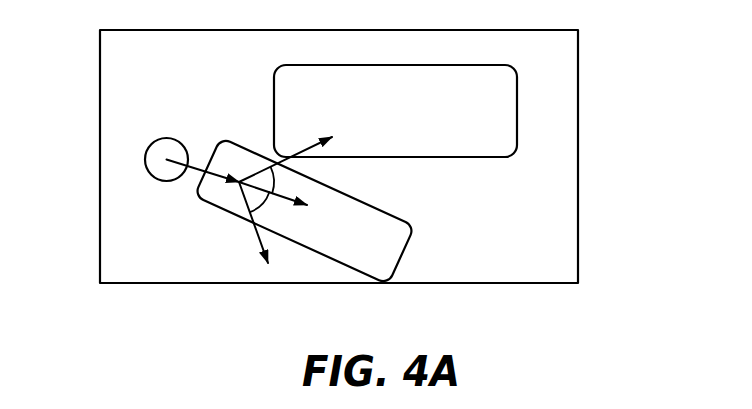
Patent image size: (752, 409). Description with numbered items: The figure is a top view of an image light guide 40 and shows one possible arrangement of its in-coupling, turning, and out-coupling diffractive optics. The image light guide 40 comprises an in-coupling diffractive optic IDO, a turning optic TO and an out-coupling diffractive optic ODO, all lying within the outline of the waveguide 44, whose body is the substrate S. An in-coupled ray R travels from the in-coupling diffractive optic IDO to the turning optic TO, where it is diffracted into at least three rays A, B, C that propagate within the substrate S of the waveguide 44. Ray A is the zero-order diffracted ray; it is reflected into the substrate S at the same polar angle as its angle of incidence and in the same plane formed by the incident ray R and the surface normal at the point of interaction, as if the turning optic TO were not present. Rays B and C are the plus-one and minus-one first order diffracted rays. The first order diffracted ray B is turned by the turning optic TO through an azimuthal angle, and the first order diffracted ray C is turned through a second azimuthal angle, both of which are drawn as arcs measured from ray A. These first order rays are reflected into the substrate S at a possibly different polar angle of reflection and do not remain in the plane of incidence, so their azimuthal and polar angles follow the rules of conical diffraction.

The waveguide 44 is at (575, 172).
The substrate S is at (568, 73).
The image light guide 40 is at (711, 300).
The out-coupling diffractive optic ODO is at (418, 63).
The turning optic TO is at (219, 134).
The in-coupling diffractive optic IDO is at (137, 150).
The in-coupled ray R is at (203, 186).
The zero-order diffracted ray A is at (283, 203).
The first order diffracted ray B is at (292, 148).
The first order diffracted ray C is at (265, 232).